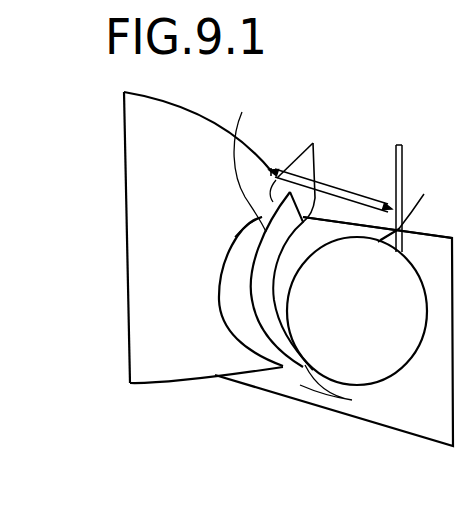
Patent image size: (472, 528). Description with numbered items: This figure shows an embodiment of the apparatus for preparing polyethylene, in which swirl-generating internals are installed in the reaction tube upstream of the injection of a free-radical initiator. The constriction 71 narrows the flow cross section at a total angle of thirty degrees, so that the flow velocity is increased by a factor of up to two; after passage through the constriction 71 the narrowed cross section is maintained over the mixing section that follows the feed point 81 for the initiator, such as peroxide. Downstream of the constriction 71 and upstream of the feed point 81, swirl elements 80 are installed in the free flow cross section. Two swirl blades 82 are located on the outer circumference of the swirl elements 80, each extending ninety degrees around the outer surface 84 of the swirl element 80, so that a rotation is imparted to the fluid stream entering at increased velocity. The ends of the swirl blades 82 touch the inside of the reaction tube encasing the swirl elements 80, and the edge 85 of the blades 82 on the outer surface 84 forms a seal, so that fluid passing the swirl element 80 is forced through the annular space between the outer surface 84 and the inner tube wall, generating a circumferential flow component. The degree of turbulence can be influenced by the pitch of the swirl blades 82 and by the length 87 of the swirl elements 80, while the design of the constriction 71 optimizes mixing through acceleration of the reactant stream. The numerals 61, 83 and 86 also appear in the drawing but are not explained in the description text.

The panel 61 is at (119, 206).
The constriction 71 is at (268, 133).
The swirl element 80 is at (338, 224).
The feed point 81 is at (404, 153).
The swirl blade 82 is at (345, 444).
The ball 83 is at (274, 390).
The outer surface 84 is at (409, 203).
The edge 85 is at (255, 160).
The crescent member 86 is at (265, 370).
The length 87 is at (330, 188).